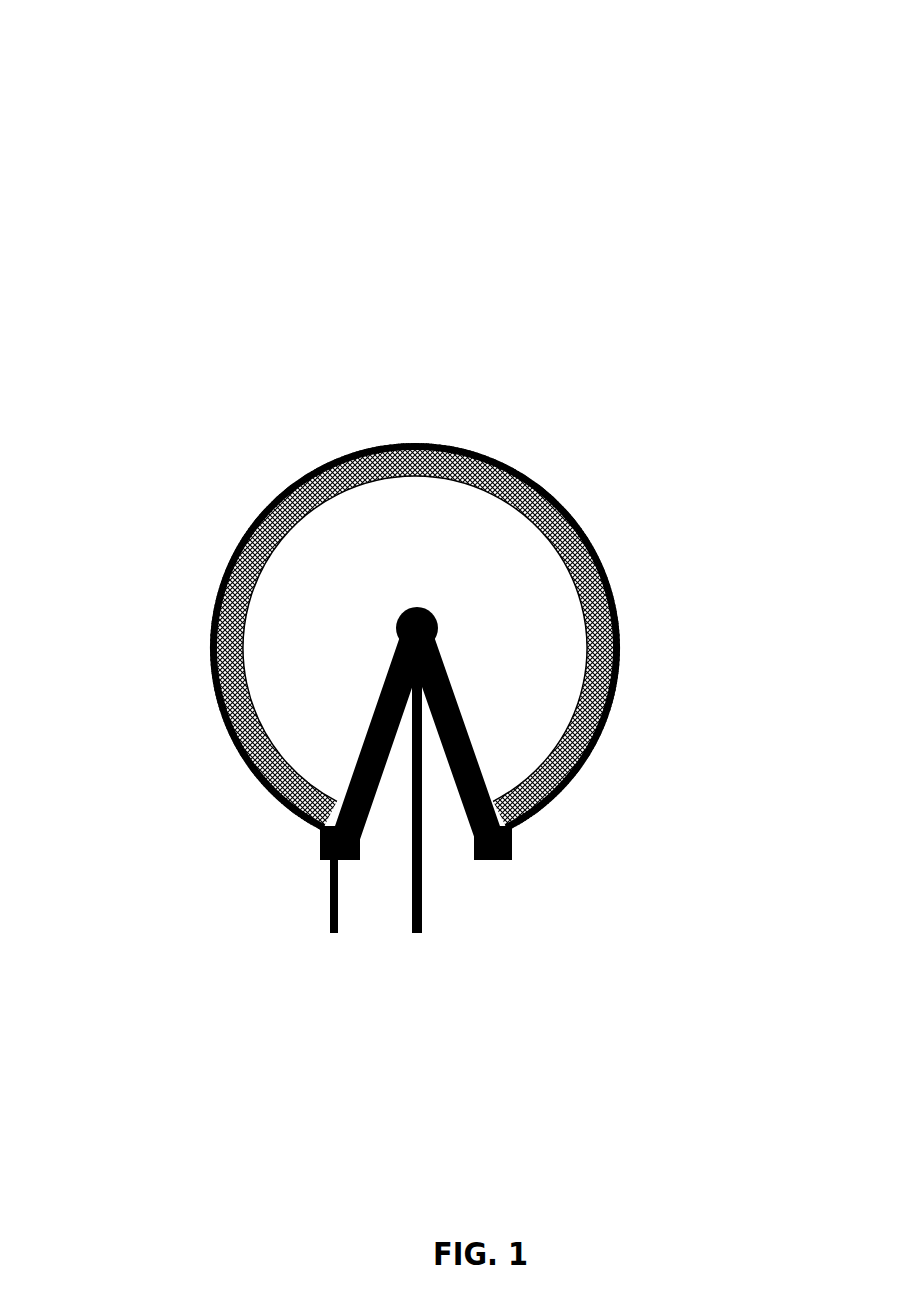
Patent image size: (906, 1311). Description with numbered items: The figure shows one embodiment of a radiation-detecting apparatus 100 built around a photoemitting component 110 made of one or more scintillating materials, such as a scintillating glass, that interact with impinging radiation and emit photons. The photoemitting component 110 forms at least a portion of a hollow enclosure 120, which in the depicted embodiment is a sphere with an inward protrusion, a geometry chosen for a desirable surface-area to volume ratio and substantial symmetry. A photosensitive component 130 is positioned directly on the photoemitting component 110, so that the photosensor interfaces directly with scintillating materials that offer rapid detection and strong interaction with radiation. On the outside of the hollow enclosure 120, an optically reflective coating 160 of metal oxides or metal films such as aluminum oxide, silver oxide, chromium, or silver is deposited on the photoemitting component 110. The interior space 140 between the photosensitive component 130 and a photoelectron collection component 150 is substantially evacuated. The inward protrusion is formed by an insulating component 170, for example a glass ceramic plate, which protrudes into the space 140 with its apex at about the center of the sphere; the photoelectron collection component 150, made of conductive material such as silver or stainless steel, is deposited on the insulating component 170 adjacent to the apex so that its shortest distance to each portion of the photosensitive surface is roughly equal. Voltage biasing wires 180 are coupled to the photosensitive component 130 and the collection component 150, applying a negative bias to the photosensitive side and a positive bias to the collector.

The apparatus 100 is at (142, 80).
The photoemitting component 110 is at (460, 447).
The hollow enclosure 120 is at (176, 568).
The photosensitive component 130 is at (557, 503).
The space 140 is at (362, 598).
The photoelectron collection component 150 is at (437, 632).
The optically reflective coating 160 is at (337, 460).
The insulating component 170 is at (510, 845).
The voltage biasing wires 180 is at (330, 905).